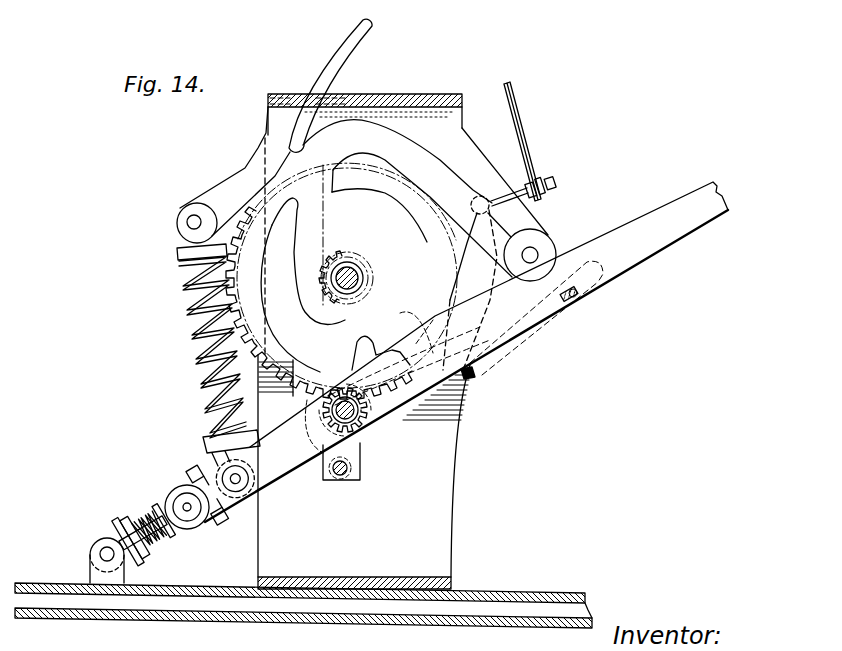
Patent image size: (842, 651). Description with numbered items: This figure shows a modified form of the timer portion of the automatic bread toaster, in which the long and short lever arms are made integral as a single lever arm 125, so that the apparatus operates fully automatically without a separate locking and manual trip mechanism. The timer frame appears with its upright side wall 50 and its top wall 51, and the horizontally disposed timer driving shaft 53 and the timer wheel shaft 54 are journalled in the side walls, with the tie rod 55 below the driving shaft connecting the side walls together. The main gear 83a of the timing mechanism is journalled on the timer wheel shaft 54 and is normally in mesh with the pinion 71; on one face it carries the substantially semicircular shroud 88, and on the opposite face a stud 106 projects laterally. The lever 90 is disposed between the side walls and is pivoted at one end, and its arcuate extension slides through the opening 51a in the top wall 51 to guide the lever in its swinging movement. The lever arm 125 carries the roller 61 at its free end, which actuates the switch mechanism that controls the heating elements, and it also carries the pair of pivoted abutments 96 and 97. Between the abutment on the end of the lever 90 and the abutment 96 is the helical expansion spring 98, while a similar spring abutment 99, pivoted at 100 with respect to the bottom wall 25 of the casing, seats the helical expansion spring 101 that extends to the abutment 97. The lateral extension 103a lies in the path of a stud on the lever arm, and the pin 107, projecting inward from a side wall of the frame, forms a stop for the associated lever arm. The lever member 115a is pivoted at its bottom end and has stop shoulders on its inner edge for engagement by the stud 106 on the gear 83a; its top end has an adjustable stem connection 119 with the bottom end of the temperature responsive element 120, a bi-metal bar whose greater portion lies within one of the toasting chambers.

The bottom wall of the casing 25 is at (268, 620).
The side wall 50 is at (456, 428).
The top wall 51 is at (443, 100).
The opening 51a is at (333, 98).
The timer driving shaft 53 is at (365, 437).
The timer wheel shaft 54 is at (364, 280).
The tie rod 55 is at (341, 480).
The roller 61 is at (196, 531).
The pinion 71 is at (385, 415).
The main gear 83a is at (320, 383).
The shroud 88 is at (372, 196).
The lever 90 is at (418, 157).
The pivoted abutment 96 is at (210, 438).
The pivoted abutment 97 is at (200, 470).
The helical expansion spring 98 is at (212, 372).
The spring abutment 99 is at (127, 513).
The pivot 100 is at (100, 545).
The helical expansion spring 101 is at (165, 543).
The lateral extension 103a is at (598, 286).
The stud 106 is at (432, 315).
The pin 107 is at (473, 378).
The lever member 115a is at (485, 282).
The adjustable stem connection 119 is at (558, 180).
The temperature responsive element 120 is at (530, 126).
The single lever arm 125 is at (556, 332).